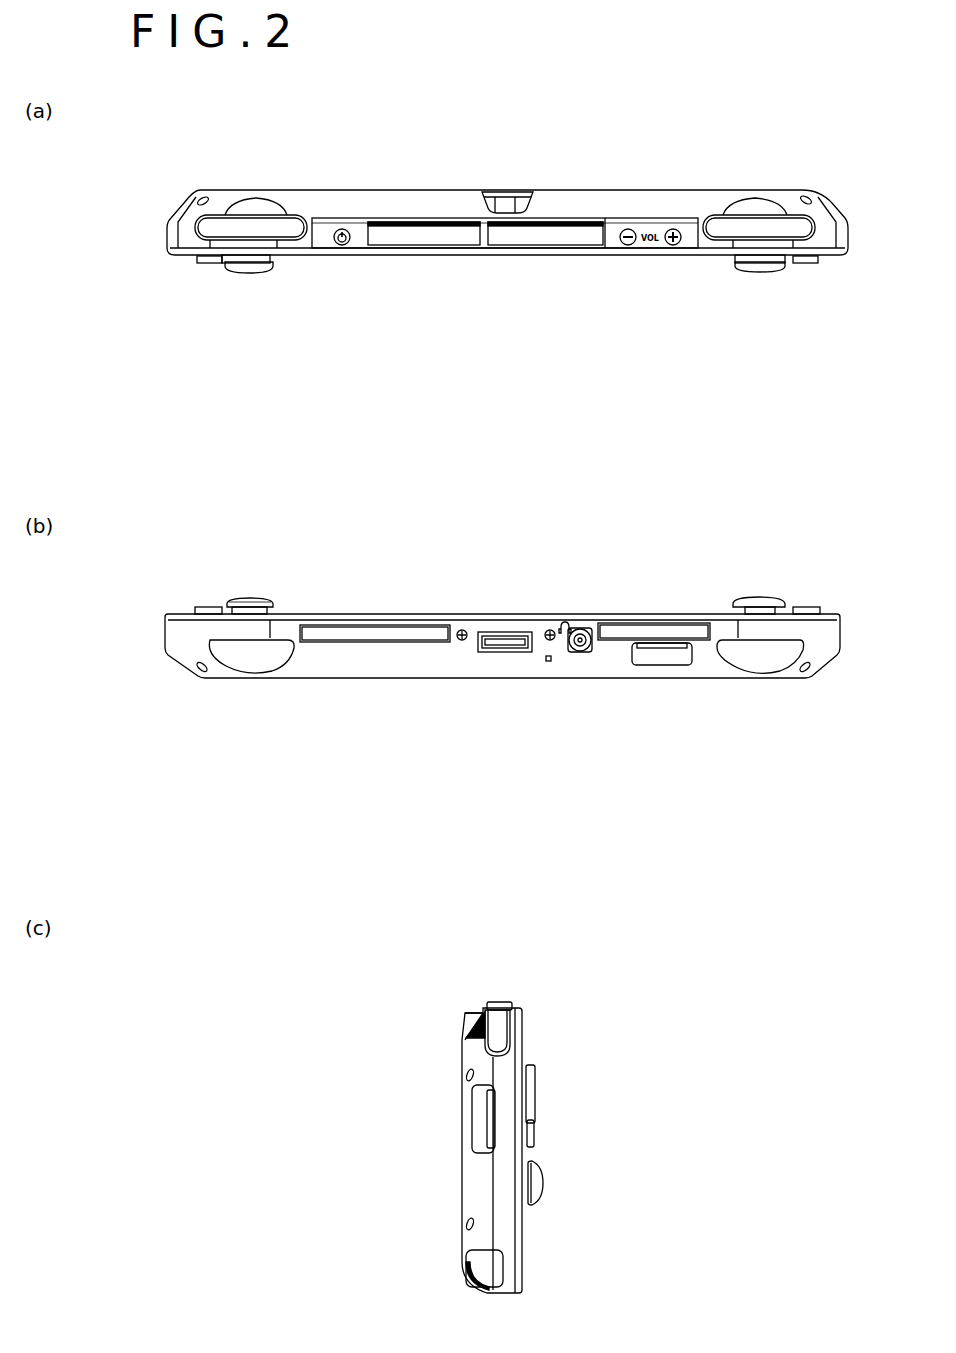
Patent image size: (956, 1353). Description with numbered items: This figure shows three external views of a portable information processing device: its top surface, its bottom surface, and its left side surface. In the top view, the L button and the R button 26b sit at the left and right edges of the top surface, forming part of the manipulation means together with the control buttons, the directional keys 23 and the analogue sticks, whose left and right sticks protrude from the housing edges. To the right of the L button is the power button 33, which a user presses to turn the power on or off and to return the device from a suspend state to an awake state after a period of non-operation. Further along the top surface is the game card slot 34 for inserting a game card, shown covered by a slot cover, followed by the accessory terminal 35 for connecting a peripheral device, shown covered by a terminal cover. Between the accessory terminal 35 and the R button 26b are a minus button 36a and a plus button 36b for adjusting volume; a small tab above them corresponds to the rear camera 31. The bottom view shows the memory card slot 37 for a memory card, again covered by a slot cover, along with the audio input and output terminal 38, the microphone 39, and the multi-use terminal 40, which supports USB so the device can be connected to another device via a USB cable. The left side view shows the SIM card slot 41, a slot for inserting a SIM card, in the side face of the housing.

The directional keys 23 is at (533, 1108).
The R button 26b is at (773, 228).
The rear camera 31 is at (508, 200).
The power button 33 is at (343, 247).
The game card slot 34 is at (425, 243).
The accessory terminal 35 is at (548, 243).
The minus button 36a is at (628, 246).
The plus button 36b is at (678, 233).
The memory card slot 37 is at (660, 665).
The audio input and output terminal 38 is at (585, 629).
The microphone 39 is at (550, 662).
The multi-use terminal 40 is at (503, 632).
The SIM card slot 41 is at (478, 1122).